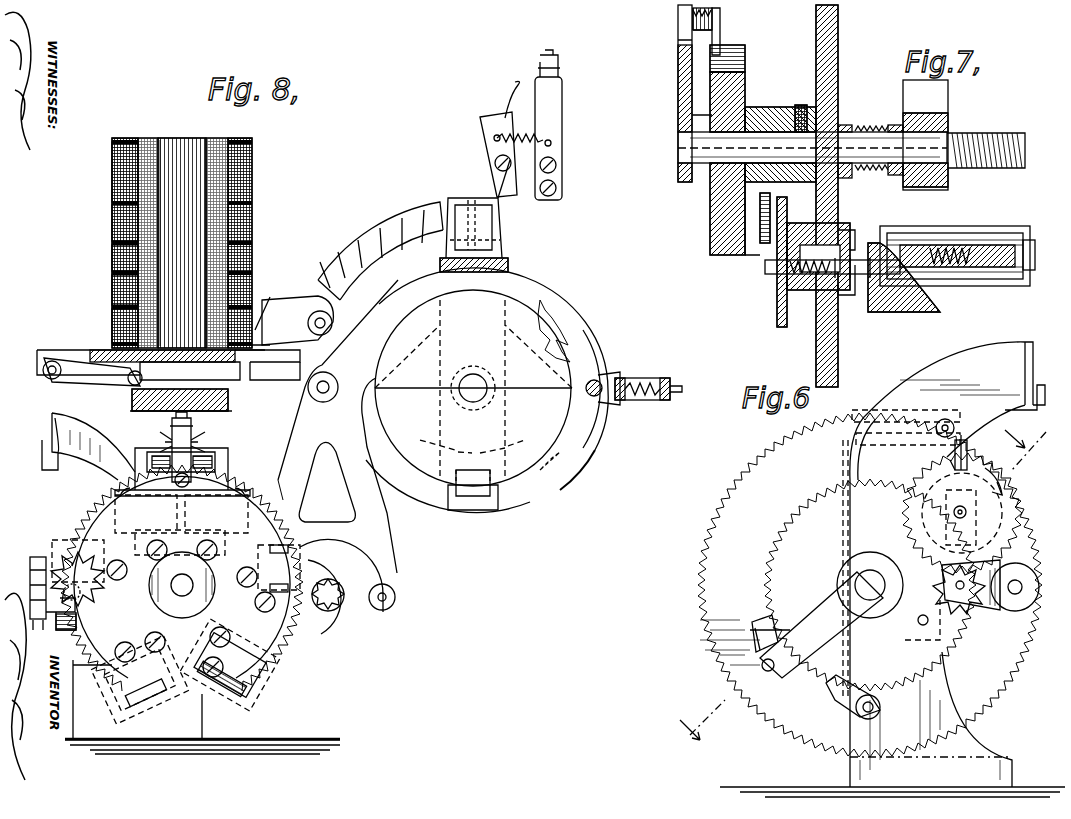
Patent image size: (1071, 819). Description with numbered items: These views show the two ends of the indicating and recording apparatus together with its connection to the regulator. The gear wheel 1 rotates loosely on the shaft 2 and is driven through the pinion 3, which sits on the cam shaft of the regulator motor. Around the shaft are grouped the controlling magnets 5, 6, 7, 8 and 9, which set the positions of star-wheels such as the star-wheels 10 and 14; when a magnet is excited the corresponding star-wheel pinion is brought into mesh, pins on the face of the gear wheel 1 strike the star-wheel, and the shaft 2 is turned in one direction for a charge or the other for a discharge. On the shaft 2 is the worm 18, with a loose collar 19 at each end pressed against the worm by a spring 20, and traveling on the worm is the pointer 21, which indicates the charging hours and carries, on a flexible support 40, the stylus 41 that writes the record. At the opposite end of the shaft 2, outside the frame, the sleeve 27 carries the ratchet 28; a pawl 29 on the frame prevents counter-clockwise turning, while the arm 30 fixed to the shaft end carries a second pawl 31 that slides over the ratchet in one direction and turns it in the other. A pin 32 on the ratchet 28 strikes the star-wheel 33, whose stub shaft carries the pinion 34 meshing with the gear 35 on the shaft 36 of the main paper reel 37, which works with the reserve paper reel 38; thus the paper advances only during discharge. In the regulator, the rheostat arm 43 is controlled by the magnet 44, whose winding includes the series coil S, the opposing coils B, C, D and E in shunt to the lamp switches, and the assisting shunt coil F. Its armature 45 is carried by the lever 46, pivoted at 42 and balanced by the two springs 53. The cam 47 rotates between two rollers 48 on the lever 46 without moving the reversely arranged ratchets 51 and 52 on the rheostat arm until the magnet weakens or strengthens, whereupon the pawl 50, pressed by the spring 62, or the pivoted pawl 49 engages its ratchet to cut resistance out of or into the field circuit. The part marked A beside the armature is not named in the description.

In FIG. 8, the gear wheel 1 is at (300, 648).
In FIG. 6, the gear wheel 1 is at (870, 585).
In FIG. 8, the shaft 2 is at (184, 585).
In FIG. 7, the shaft 2 is at (812, 147).
In FIG. 6, the shaft 2 is at (870, 585).
In FIG. 8, the pinion 3 is at (335, 603).
In FIG. 8, the magnet 5 is at (80, 545).
In FIG. 8, the magnet 6 is at (140, 678).
In FIG. 8, the magnet 7 is at (229, 665).
In FIG. 6, the magnet 7 is at (853, 579).
In FIG. 8, the magnet 8 is at (277, 578).
In FIG. 8, the magnet 9 is at (182, 541).
In FIG. 8, the star-wheel 10 is at (60, 614).
In FIG. 8, the star-wheel 14 is at (198, 450).
In FIG. 7, the worm 18 is at (1012, 135).
In FIG. 7, the loose collar 19 is at (893, 128).
In FIG. 7, the spring 20 is at (857, 130).
In FIG. 8, the pointer 21 is at (46, 466).
In FIG. 7, the pointer 21 is at (925, 135).
In FIG. 6, the pointer 21 is at (1030, 392).
In FIG. 7, the sleeve 27 is at (745, 118).
In FIG. 7, the ratchet 28 is at (745, 66).
In FIG. 6, the ratchet 28 is at (870, 585).
In FIG. 6, the pawl 29 is at (845, 692).
In FIG. 7, the arm 30 is at (678, 76).
In FIG. 6, the arm 30 is at (821, 625).
In FIG. 7, the second pawl 31 is at (718, 35).
In FIG. 6, the second pawl 31 is at (750, 630).
In FIG. 6, the pin 32 is at (923, 626).
In FIG. 7, the star-wheel 33 is at (767, 243).
In FIG. 6, the star-wheel 33 is at (958, 602).
In FIG. 6, the pinion 34 is at (1010, 578).
In FIG. 7, the gear 35 is at (777, 308).
In FIG. 6, the gear 35 is at (978, 522).
In FIG. 7, the shaft 36 is at (866, 282).
In FIG. 7, the main paper reel 37 is at (898, 312).
In FIG. 7, the reserve paper reel 38 is at (992, 232).
In FIG. 6, the flexible support 40 is at (905, 440).
In FIG. 6, the stylus 41 is at (967, 462).
In FIG. 8, the pivot 42 is at (330, 380).
In FIG. 8, the rheostat arm 43 is at (498, 252).
In FIG. 8, the magnet 44 is at (200, 233).
In FIG. 8, the armature 45 is at (150, 412).
In FIG. 8, the lever 46 is at (338, 426).
In FIG. 8, the cam 47 is at (362, 605).
In FIG. 8, the rollers 48 is at (396, 598).
In FIG. 8, the pawl 49 is at (596, 350).
In FIG. 8, the pawl 50 is at (565, 460).
In FIG. 8, the ratchet 51 is at (473, 388).
In FIG. 8, the ratchet 52 is at (449, 462).
In FIG. 8, the springs 53 is at (292, 282).
In FIG. 8, the spring 62 is at (646, 378).
In FIG. 8, the lever A is at (506, 125).
In FIG. 8, the main winding S is at (150, 258).
In FIG. 8, the shunt coil F is at (112, 178).
In FIG. 8, the individual coil B is at (118, 232).
In FIG. 8, the individual coil C is at (112, 272).
In FIG. 8, the individual coil D is at (112, 300).
In FIG. 8, the individual coil E is at (112, 328).